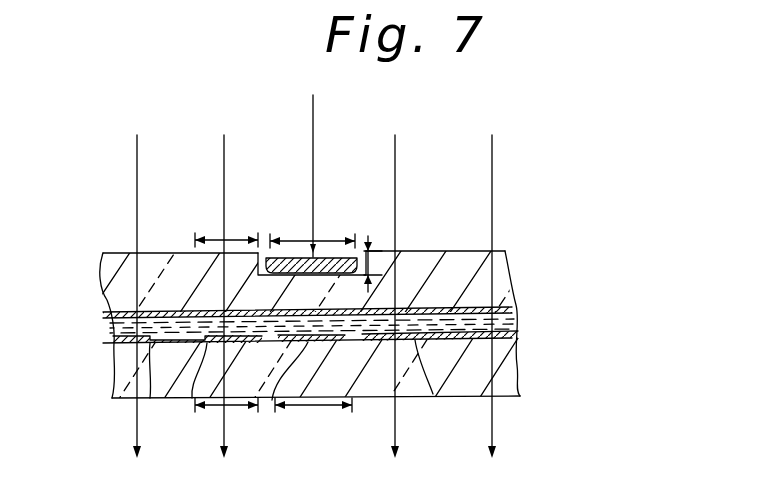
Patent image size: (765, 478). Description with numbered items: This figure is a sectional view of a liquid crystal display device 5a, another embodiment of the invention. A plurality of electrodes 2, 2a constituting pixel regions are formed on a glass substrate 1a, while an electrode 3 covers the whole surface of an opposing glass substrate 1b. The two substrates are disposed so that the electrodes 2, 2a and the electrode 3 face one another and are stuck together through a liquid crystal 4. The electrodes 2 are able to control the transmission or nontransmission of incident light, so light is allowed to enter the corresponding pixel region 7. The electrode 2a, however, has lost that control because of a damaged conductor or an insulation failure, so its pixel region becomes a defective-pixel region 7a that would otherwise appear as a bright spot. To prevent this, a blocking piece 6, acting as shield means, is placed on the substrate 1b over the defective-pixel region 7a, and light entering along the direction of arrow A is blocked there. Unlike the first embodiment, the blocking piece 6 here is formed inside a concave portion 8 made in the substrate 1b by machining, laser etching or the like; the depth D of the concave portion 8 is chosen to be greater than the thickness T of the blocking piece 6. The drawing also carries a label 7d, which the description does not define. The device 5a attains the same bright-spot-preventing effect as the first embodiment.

The substrate 1a is at (128, 385).
The substrate 1b is at (118, 262).
The electrodes 2 is at (155, 398).
The electrode 2a is at (266, 398).
The electrode 3 is at (516, 306).
The liquid crystal 4 is at (122, 330).
The liquid crystal display device 5a is at (540, 236).
The blocking piece 6 is at (295, 262).
The pixel region 7 is at (208, 236).
The defective-pixel region 7a is at (312, 406).
The recess 7d is at (302, 251).
The concave portion 8 is at (346, 250).
The arrow A is at (492, 163).
The depth D is at (268, 248).
The thickness T is at (378, 247).